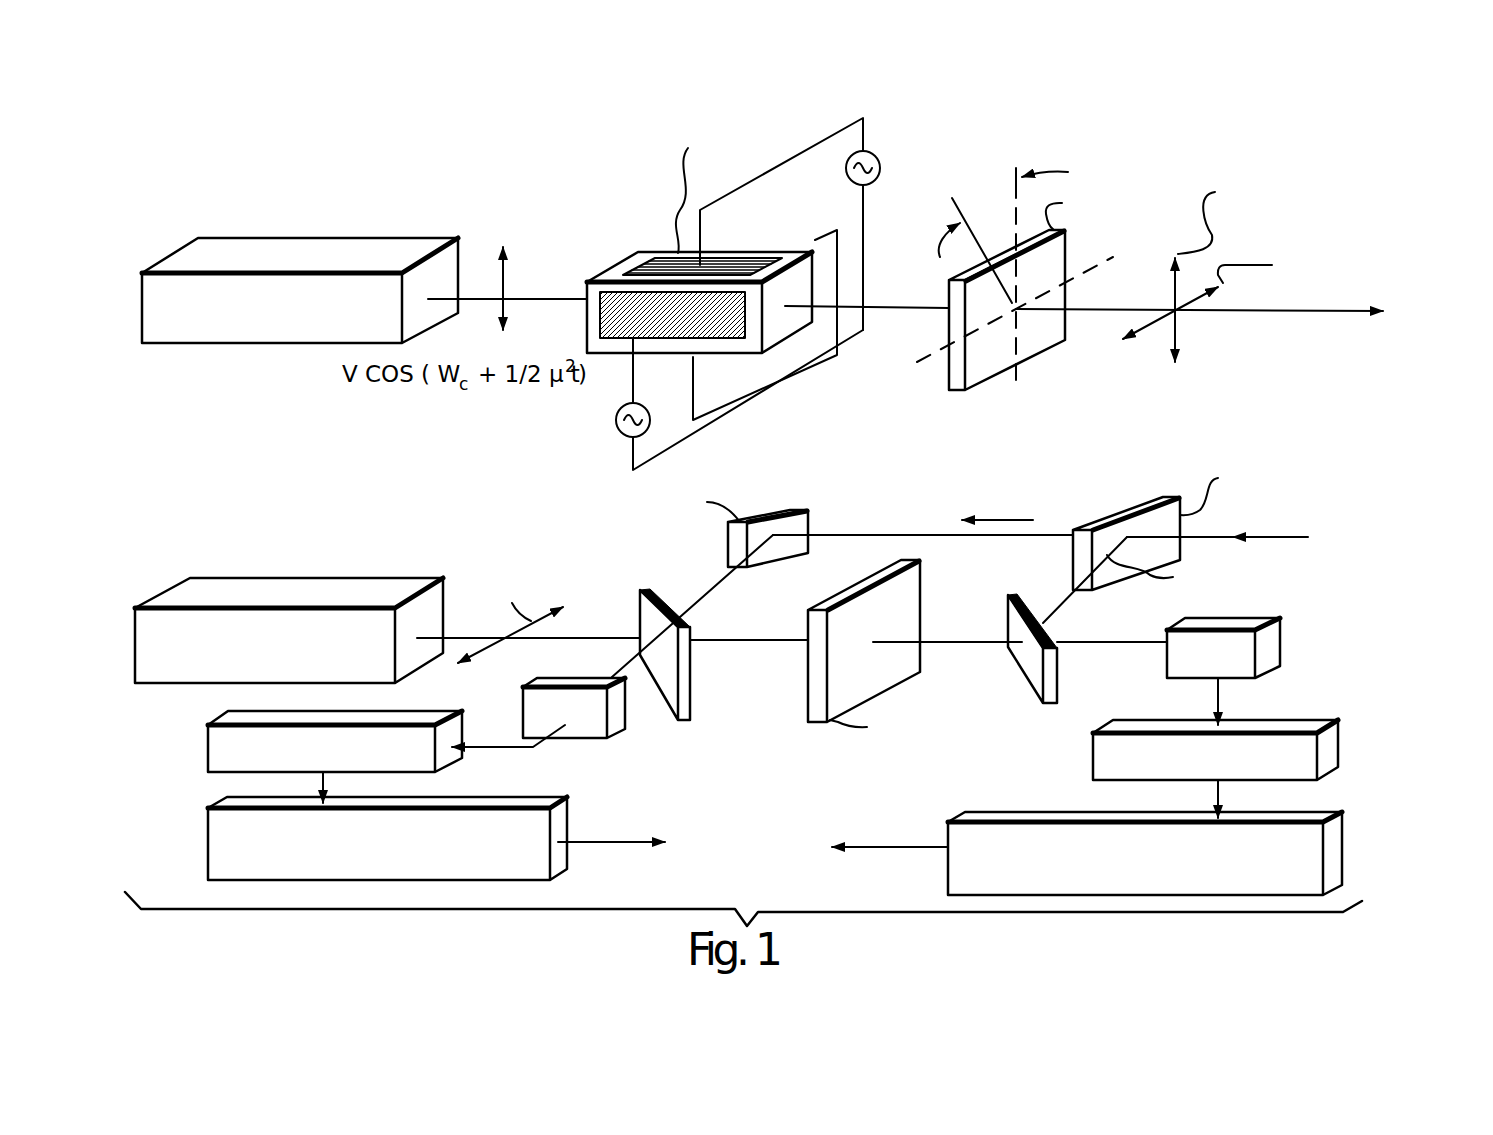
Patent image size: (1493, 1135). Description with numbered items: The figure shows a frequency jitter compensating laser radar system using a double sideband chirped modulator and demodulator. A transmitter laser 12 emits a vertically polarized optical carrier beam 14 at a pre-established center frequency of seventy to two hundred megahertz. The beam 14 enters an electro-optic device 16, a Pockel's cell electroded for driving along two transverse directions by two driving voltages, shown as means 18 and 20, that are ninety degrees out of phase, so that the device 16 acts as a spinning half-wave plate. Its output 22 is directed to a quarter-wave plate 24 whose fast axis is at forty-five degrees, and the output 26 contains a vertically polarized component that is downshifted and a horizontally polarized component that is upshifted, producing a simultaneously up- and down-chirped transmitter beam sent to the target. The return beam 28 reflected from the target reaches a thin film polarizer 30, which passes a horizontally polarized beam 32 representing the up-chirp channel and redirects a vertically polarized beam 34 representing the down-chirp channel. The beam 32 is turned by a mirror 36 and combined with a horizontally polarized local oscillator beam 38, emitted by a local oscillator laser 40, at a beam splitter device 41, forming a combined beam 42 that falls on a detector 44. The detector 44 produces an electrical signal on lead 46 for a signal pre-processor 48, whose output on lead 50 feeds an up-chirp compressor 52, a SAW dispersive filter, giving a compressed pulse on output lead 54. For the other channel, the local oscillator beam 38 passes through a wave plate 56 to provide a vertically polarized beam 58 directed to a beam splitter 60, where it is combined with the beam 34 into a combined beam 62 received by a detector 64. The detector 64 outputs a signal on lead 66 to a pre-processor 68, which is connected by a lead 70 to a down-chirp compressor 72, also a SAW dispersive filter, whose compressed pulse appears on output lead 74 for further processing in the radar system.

The transmitter laser 12 is at (312, 238).
The optical laser carrier beam 14 is at (513, 299).
The electro-optic device 16 is at (727, 257).
The driving voltage means 18 is at (616, 420).
The sine voltage source 20 is at (880, 168).
The output of electro-acoustic device 22 is at (880, 308).
The quarter-wave plate 24 is at (1025, 358).
The output from quarter-wave plate 26 is at (1093, 310).
The return beam 28 is at (1253, 540).
The thin film polarizer 30 is at (1168, 495).
The horizontally polarized beam 32 is at (870, 536).
The vertically polarized light beam 34 is at (1063, 597).
The mirror 36 is at (793, 503).
The local oscillator beam 38 is at (568, 635).
The local oscillator laser 40 is at (287, 576).
The beam combiner plate 41 is at (643, 588).
The combined beam 42 is at (624, 662).
The detector 44 is at (583, 740).
The lead 46 is at (492, 747).
The signal pre-processor 48 is at (207, 750).
The lead 50 is at (325, 780).
The up-chirp compressor 52 is at (207, 842).
The output lead 54 is at (582, 843).
The quarter-wave plate 56 is at (857, 585).
The vertically polarized beam 58 is at (943, 643).
The beam splitter 60 is at (1028, 677).
The combined beam 62 is at (1073, 645).
The detector 64 is at (1280, 645).
The lead 66 is at (1220, 700).
The pre-processor 68 is at (1292, 718).
The down-chirp compressor 70 is at (1217, 797).
The lead 72 is at (1050, 812).
The down-chirp compressor output 74 is at (880, 848).